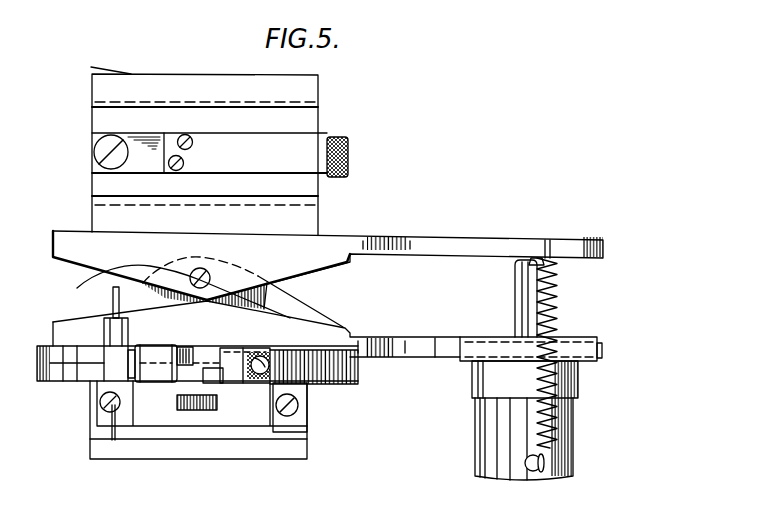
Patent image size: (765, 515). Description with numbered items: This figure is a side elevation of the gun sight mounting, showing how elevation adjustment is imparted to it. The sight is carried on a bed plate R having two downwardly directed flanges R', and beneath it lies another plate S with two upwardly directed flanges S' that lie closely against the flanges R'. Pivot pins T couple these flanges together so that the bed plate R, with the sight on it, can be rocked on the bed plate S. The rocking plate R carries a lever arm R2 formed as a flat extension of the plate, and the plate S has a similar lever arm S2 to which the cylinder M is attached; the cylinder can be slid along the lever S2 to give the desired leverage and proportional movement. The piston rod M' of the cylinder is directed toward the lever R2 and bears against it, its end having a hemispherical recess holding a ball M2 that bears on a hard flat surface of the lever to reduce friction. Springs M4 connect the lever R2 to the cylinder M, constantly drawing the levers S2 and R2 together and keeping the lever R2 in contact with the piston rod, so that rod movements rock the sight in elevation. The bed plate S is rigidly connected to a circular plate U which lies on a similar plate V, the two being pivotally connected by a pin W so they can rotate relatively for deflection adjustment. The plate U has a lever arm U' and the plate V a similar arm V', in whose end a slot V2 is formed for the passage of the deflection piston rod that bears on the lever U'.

The downwardly directed flanges R' is at (200, 183).
The bed plate R is at (328, 250).
The lever arm R2 is at (520, 250).
The pivot pins T is at (200, 292).
The upwardly directed flanges S' is at (256, 311).
The bed plate S is at (275, 377).
The lever arm S2 is at (450, 350).
The plate V is at (197, 378).
The circular plate U is at (82, 363).
The lever arm U' is at (152, 421).
The pin W is at (197, 410).
The lever arm V' is at (236, 423).
The slot V2 is at (272, 375).
The cylinder M is at (519, 408).
The piston rod M' is at (505, 298).
The ball M2 is at (533, 258).
The springs M4 is at (558, 295).